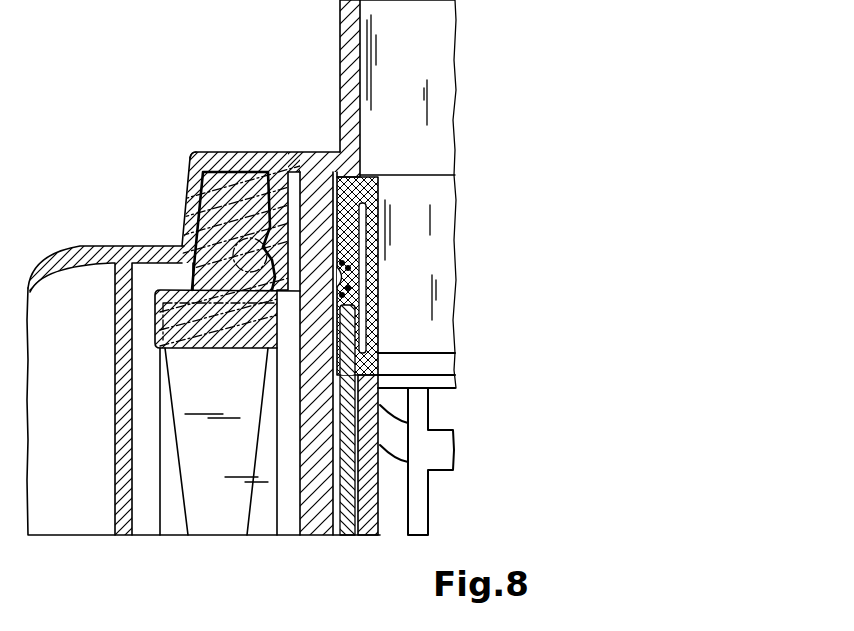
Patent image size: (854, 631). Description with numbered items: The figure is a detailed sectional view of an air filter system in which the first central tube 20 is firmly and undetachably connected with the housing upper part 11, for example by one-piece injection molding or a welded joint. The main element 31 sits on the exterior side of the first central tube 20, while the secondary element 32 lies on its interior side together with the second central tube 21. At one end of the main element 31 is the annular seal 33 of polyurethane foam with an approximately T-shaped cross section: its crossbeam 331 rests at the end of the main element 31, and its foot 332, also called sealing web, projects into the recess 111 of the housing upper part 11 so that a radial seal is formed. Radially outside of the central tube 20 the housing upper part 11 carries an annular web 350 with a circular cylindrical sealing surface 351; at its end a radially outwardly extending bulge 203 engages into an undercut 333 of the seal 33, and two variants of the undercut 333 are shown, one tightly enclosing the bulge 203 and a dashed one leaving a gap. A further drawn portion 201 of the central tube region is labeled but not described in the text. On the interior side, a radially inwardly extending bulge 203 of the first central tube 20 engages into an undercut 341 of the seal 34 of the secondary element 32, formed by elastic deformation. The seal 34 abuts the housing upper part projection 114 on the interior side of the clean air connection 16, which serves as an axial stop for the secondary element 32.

The housing upper part 11 is at (58, 262).
The clean air connection 16 is at (355, 25).
The first central tube 20 is at (311, 510).
The second central tube 21 is at (370, 505).
The main element 31 is at (173, 507).
The secondary element 32 is at (345, 510).
The seal 33 is at (193, 200).
The seal 34 is at (363, 194).
The recess 111 is at (186, 176).
The housing upper part projection 114 is at (347, 157).
The support rod 201 is at (268, 300).
The bulge 203 is at (349, 279).
The crossbeam 331 is at (167, 290).
The foot 332 is at (189, 228).
The undercut 333 is at (205, 206).
The undercut 341 is at (354, 292).
The annular web 350 is at (277, 195).
The sealing surface 351 is at (250, 210).